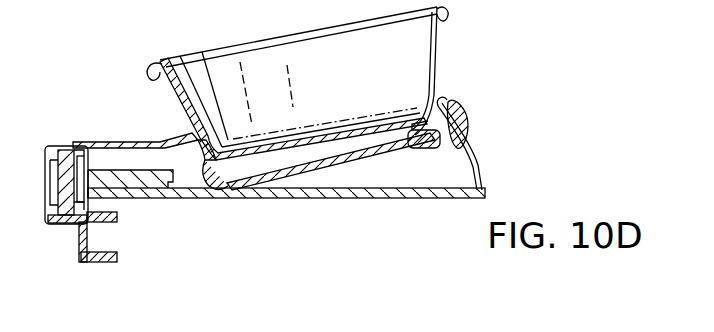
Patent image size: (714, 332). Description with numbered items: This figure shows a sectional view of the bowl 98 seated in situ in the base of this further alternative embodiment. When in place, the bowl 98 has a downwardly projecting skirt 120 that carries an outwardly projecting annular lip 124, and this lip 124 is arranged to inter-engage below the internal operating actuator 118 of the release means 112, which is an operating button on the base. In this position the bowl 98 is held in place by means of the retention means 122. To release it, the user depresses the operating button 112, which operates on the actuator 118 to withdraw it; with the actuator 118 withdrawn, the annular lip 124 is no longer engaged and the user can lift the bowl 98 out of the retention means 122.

The bowl 98 is at (440, 42).
The release means 112 is at (467, 122).
The internal operating actuator 118 is at (421, 143).
The downwardly projecting skirt 120 is at (413, 140).
The retention means 122 is at (207, 176).
The outwardly projecting annular lip 124 is at (473, 168).